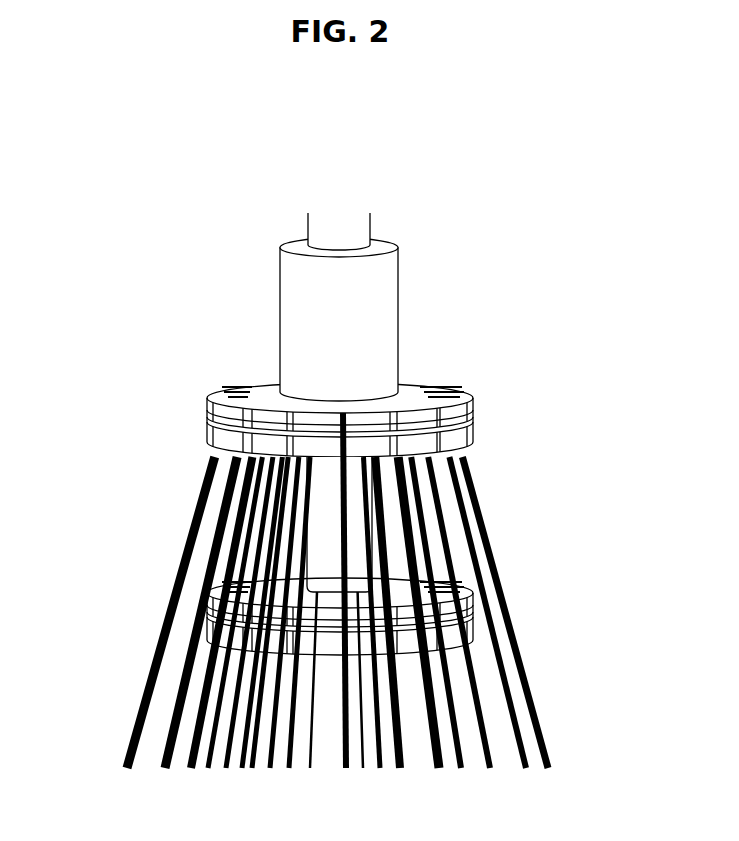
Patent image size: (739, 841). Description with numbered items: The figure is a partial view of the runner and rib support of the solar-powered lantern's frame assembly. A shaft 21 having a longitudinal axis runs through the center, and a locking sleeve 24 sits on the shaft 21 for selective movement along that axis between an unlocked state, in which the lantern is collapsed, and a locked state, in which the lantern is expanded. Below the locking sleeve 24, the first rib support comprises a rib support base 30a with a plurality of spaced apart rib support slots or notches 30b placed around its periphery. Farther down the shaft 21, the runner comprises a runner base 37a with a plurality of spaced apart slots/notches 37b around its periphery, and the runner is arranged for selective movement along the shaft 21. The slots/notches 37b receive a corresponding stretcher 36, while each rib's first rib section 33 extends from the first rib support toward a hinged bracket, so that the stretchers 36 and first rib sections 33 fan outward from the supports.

The shaft 21 is at (348, 232).
The locking sleeve 24 is at (323, 290).
The rib support base 30a is at (253, 390).
The rib support slots or notches 30b is at (445, 405).
The runner base 37a is at (217, 608).
The slots/notches 37b is at (448, 598).
The first rib section 33 is at (520, 630).
The stretcher 36 is at (297, 718).